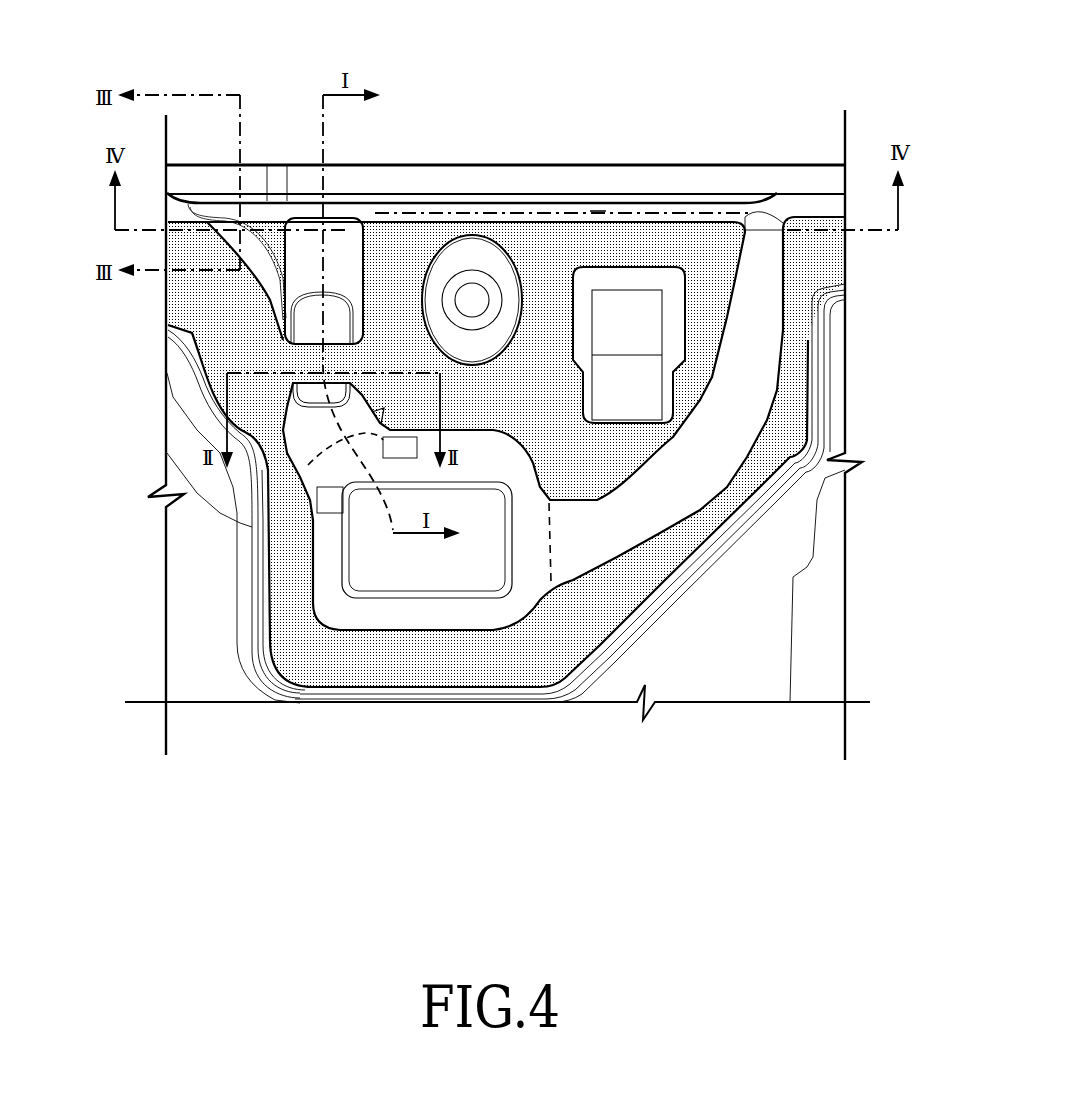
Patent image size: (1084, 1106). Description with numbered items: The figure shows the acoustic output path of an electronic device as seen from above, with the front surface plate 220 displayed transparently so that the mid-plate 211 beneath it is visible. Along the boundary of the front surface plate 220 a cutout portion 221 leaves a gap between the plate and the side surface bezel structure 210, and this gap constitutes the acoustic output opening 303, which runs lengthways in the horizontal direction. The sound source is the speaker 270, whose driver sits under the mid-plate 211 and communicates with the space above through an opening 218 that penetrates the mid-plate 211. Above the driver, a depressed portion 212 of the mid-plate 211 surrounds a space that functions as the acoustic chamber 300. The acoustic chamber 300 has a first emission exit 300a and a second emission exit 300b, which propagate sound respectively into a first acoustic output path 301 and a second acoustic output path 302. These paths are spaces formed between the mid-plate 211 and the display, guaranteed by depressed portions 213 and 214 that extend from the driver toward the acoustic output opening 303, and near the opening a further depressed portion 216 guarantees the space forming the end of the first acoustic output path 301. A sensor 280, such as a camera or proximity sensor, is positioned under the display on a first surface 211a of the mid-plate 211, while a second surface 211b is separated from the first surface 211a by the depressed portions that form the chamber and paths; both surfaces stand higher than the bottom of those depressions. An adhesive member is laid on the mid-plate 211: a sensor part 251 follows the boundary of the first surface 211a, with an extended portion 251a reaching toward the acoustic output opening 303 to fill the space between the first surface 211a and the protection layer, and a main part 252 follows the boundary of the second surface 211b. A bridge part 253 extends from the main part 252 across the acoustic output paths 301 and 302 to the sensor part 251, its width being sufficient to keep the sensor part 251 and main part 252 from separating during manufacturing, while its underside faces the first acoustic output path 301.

The side surface bezel structure 210 is at (572, 165).
The mid-plate 211 is at (197, 643).
The first surface 211a is at (385, 447).
The second surface 211b is at (268, 279).
The depressed portion 212 is at (410, 615).
The depressed portion 213 is at (303, 275).
The depressed portion 214 is at (746, 328).
The depressed portion 216 is at (597, 210).
The opening 218 is at (473, 598).
The front surface plate 220 is at (805, 183).
The cutout portion 221 is at (722, 197).
The sensor part 251 is at (633, 440).
The extended portion 251a is at (413, 210).
The main part 252 is at (728, 482).
The bridge part 253 is at (350, 350).
The speaker 270 is at (390, 553).
The sensor 280 is at (472, 276).
The acoustic chamber 300 is at (308, 452).
The first emission exit 300a is at (338, 612).
The second emission exit 300b is at (553, 550).
The first acoustic output path 301 is at (306, 420).
The second acoustic output path 302 is at (733, 379).
The acoustic output opening 303 is at (626, 181).